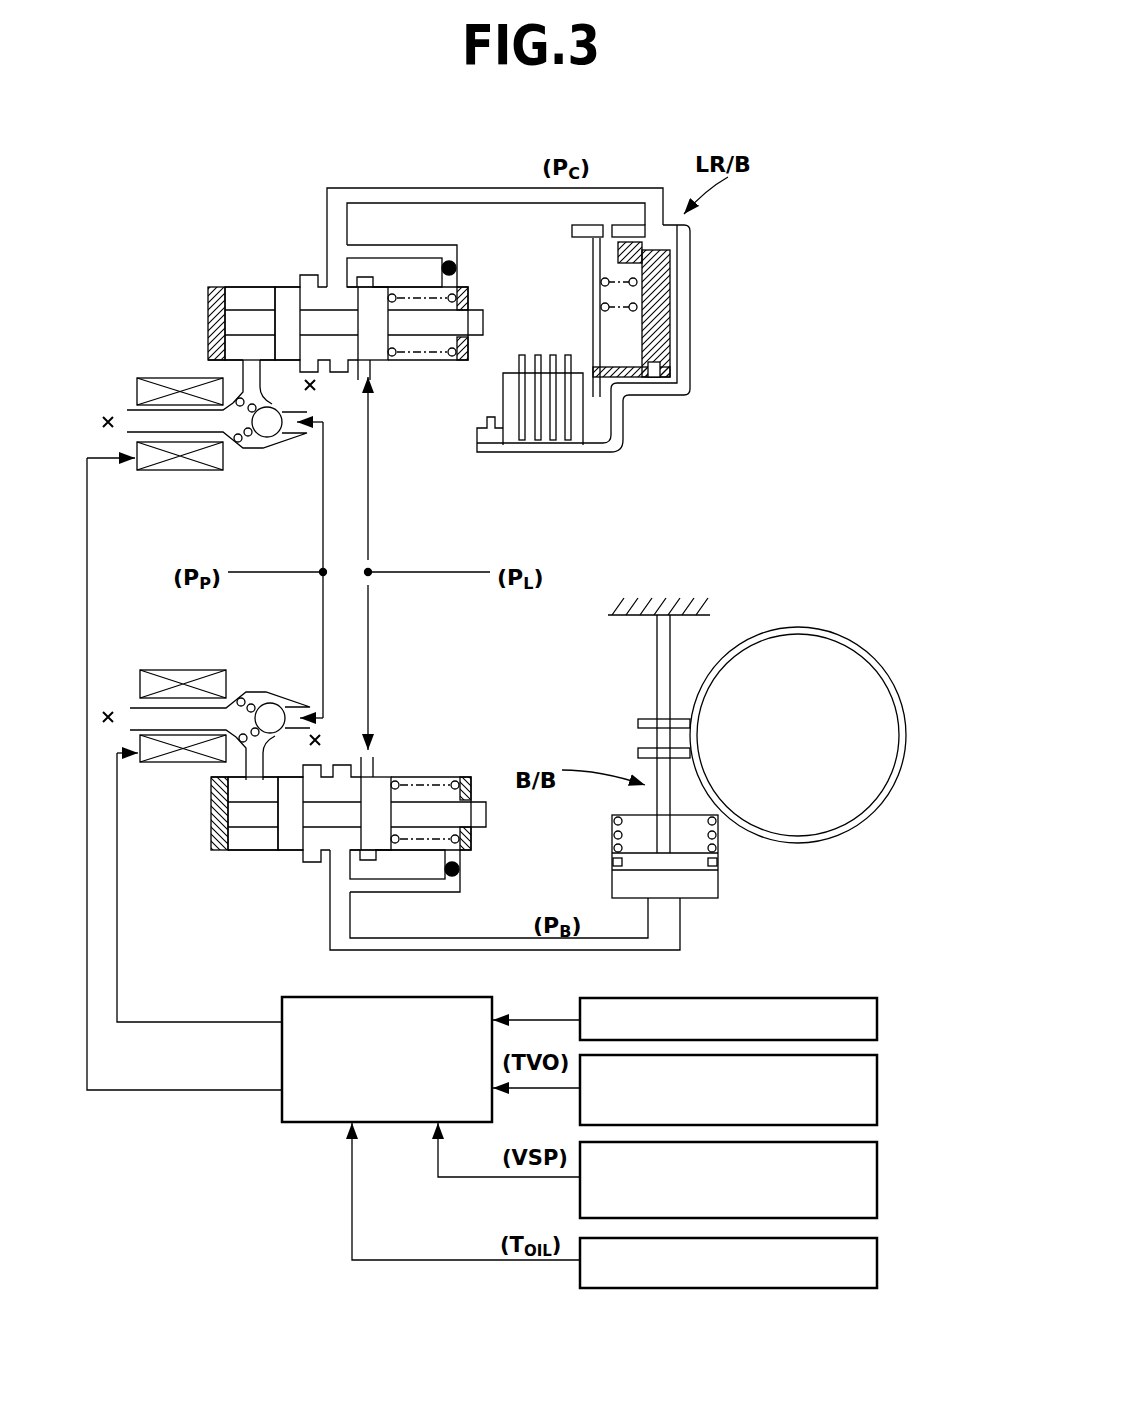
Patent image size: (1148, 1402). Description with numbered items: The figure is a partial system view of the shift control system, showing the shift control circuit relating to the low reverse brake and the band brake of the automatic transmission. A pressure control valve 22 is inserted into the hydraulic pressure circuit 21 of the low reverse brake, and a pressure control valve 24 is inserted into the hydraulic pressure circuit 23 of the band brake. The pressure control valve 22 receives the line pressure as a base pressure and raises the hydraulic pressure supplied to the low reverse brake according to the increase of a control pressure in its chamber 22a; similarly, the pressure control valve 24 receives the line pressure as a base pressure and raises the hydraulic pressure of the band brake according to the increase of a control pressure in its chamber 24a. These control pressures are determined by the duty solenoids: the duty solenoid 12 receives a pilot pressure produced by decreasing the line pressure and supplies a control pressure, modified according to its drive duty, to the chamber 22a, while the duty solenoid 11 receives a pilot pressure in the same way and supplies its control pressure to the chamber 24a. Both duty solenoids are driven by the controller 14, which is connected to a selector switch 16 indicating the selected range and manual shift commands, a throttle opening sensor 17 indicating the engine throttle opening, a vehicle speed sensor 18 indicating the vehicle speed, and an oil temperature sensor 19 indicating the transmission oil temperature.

The duty solenoid 11 is at (185, 672).
The duty solenoid 12 is at (155, 377).
The controller 14 is at (290, 1122).
The selector switch 16 is at (877, 1020).
The throttle opening sensor 17 is at (877, 1088).
The vehicle speed sensor 18 is at (877, 1172).
The oil temperature sensor 19 is at (877, 1258).
The hydraulic pressure circuit 21 is at (466, 188).
The pressure control valve 22 is at (249, 272).
The chamber 22a is at (238, 293).
The hydraulic pressure circuit 23 is at (458, 938).
The pressure control valve 24 is at (410, 762).
The chamber 24a is at (242, 845).